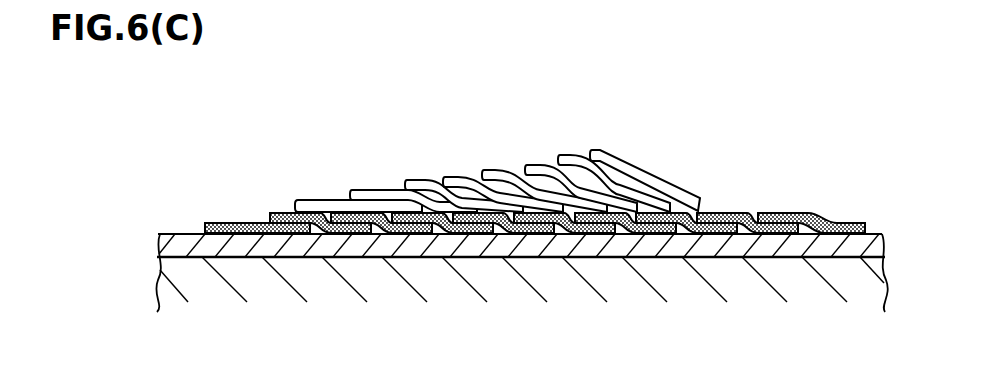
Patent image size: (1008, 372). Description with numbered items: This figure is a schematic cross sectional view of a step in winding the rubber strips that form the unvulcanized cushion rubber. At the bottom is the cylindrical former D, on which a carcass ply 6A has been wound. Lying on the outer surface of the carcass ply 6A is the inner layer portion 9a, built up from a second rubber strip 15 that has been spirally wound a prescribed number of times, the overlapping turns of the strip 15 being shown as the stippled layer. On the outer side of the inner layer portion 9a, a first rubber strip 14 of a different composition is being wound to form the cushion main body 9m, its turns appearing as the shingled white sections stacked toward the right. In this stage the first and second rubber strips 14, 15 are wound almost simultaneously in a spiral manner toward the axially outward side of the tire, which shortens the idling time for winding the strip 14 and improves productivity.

The carcass ply 6A is at (835, 246).
The cylindrical former D is at (640, 318).
The inner layer portion 9a is at (529, 144).
The second rubber strip 15 is at (222, 223).
The cushion main body 9m is at (497, 134).
The first rubber strip 14 is at (336, 204).